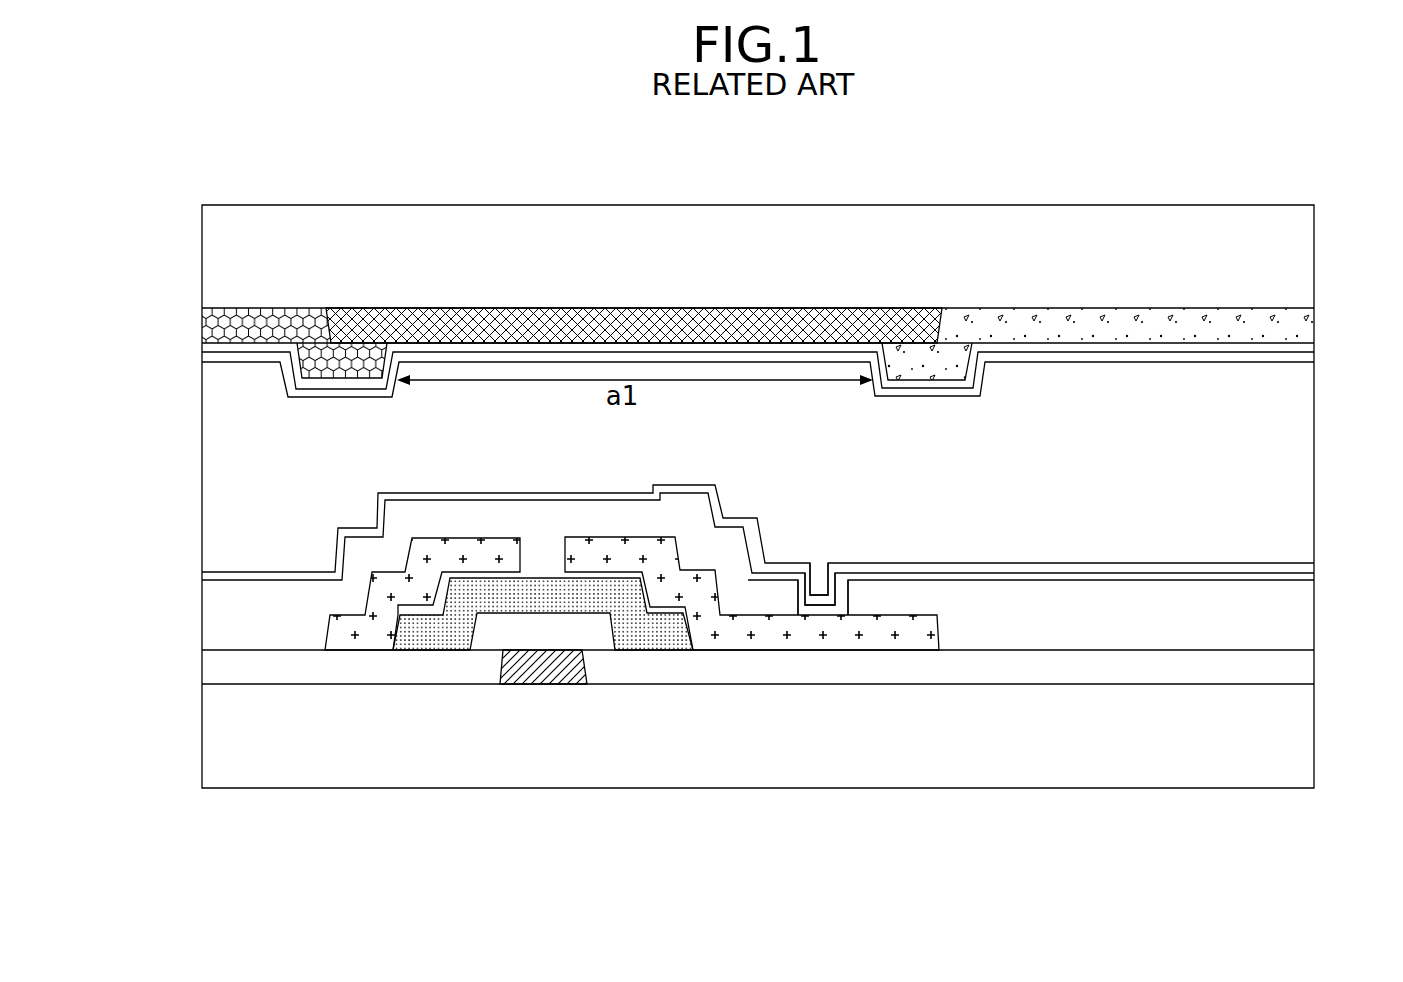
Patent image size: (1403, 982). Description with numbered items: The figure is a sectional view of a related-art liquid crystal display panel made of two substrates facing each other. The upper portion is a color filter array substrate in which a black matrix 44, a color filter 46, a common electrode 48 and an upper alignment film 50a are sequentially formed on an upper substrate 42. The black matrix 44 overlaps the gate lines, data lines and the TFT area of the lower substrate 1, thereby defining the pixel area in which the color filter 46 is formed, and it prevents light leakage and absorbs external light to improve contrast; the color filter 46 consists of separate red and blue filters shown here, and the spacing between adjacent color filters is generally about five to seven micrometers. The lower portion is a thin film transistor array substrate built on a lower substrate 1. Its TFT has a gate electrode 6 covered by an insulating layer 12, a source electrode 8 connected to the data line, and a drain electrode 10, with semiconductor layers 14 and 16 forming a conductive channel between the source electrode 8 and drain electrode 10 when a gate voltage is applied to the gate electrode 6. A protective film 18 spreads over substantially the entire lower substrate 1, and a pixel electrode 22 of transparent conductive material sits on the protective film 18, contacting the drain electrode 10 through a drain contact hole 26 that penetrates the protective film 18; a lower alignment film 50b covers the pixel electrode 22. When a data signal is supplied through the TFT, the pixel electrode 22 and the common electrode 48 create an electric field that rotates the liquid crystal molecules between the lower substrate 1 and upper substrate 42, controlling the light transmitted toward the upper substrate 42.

The lower substrate 1 is at (1303, 722).
The gate electrode 6 is at (557, 672).
The source electrode 8 is at (463, 550).
The drain electrode 10 is at (598, 550).
The gate insulating layer 12 is at (1303, 668).
The semiconductor layer 14 is at (451, 637).
The semiconductor layer 16 is at (684, 607).
The protective film 18 is at (1303, 625).
The pixel electrode 22 is at (1305, 578).
The drain contact hole 26 is at (822, 566).
The upper substrate 42 is at (1303, 250).
The black matrix 44 is at (592, 305).
The color filter 46 is at (1305, 320).
The common electrode 48 is at (1300, 352).
The upper alignment film 50a is at (1305, 362).
The lower alignment film 50b is at (1305, 565).